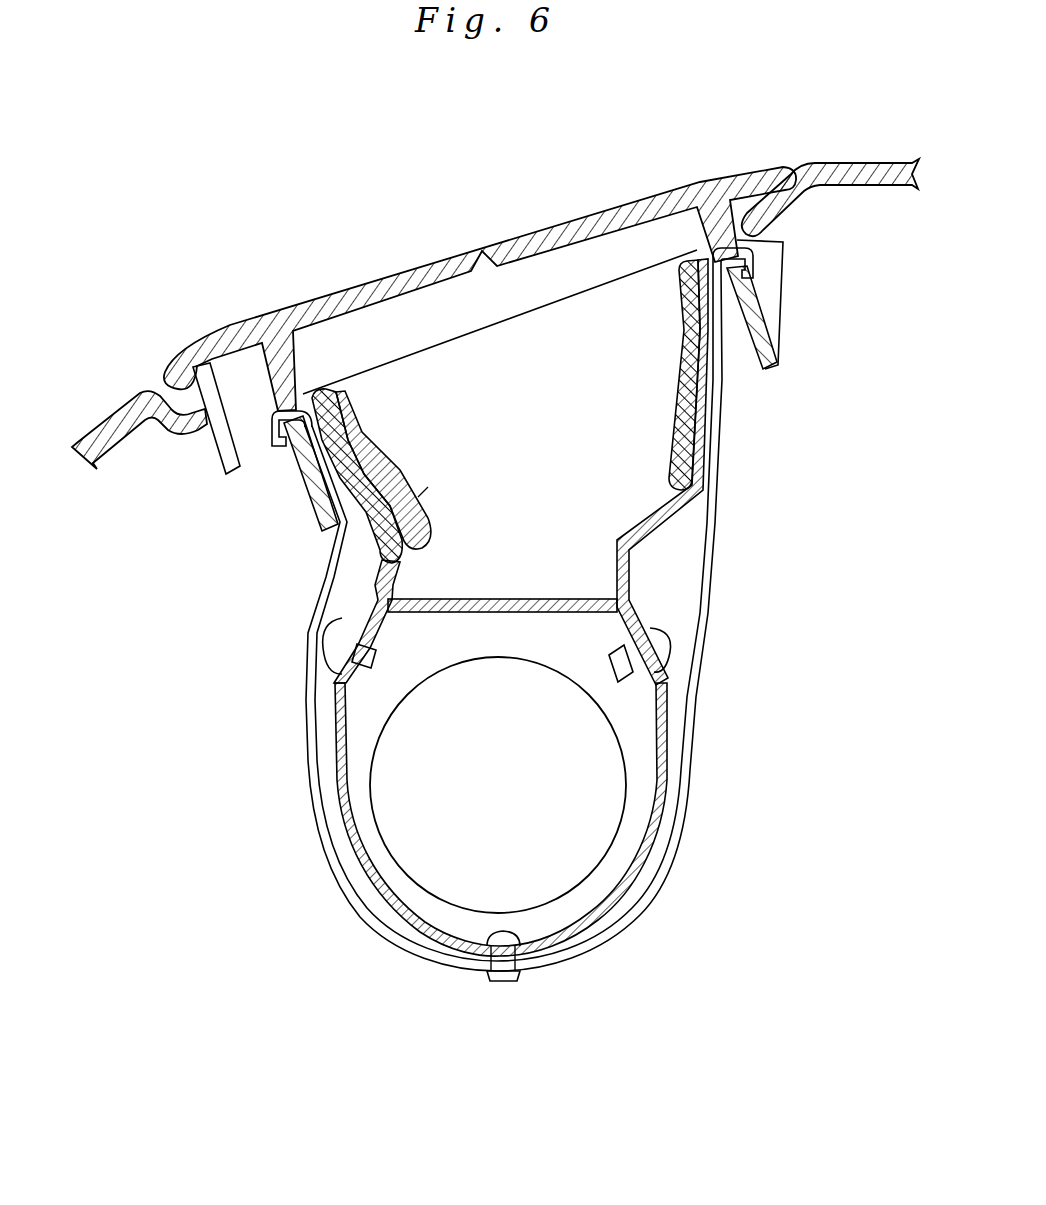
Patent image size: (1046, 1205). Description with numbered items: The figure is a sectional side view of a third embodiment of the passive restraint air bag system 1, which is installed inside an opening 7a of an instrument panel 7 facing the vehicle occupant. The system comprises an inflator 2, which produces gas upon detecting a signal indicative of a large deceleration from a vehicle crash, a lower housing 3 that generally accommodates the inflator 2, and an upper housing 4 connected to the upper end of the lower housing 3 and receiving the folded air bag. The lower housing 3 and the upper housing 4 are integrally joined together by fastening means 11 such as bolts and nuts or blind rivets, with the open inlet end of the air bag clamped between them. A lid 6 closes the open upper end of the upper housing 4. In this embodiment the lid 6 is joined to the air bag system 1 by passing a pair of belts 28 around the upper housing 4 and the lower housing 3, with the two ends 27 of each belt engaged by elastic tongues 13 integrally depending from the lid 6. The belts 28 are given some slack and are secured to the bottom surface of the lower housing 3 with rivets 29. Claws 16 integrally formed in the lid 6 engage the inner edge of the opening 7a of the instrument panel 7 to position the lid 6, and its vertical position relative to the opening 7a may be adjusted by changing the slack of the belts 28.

The air bag system 1 is at (600, 580).
The inflator 2 is at (572, 872).
The lower housing 3 is at (660, 827).
The upper housing 4 is at (712, 524).
The lid 6 is at (609, 205).
The instrument panel 7 is at (872, 166).
The opening 7a is at (195, 437).
The fastening means 11 is at (325, 638).
The elastic tongues 13 is at (333, 537).
The claws 16 is at (212, 457).
The ends 27 is at (276, 448).
The belts 28 is at (709, 623).
The rivets 29 is at (504, 983).